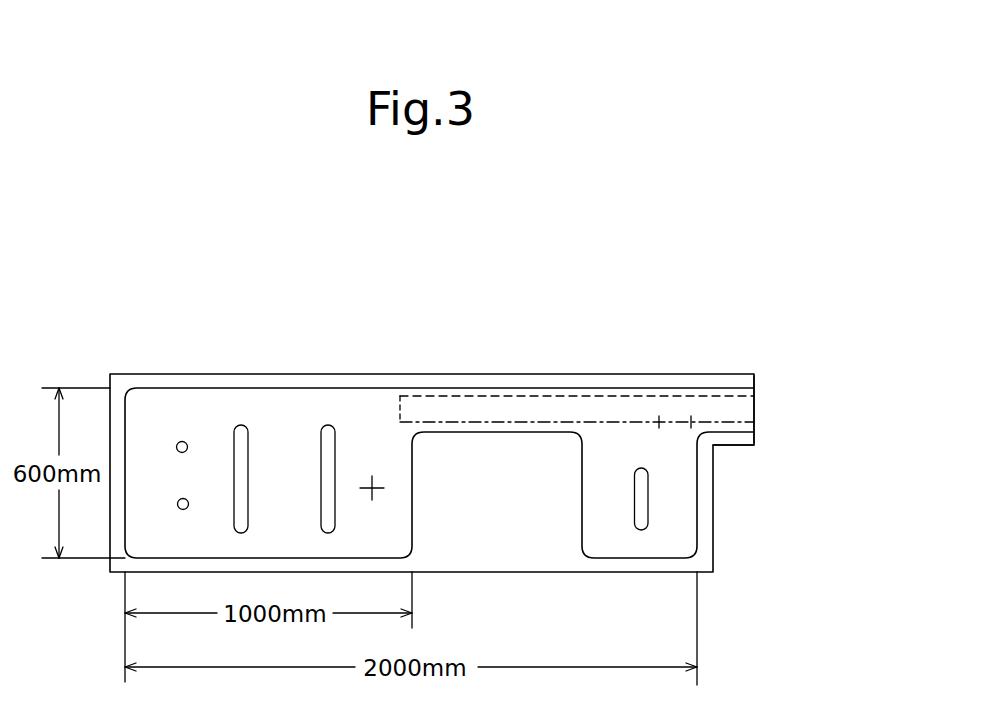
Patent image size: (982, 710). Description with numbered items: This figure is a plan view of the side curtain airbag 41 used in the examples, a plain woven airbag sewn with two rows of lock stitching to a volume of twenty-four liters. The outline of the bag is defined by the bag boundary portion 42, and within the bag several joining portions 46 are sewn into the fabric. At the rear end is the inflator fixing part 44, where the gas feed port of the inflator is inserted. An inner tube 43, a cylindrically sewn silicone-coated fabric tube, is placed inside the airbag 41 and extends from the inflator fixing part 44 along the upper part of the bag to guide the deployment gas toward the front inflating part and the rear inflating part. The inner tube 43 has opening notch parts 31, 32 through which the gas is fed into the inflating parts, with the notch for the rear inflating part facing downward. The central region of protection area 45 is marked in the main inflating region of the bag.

The opening notch part 31 is at (677, 418).
The opening notch part 32 is at (403, 408).
The side curtain airbag 41 is at (172, 369).
The bag boundary portion 42 is at (290, 386).
The inner tube 43 is at (757, 402).
The inflator fixing part 44 is at (741, 452).
The central region of protection area 45 is at (380, 488).
The joining portion 46 is at (184, 498).